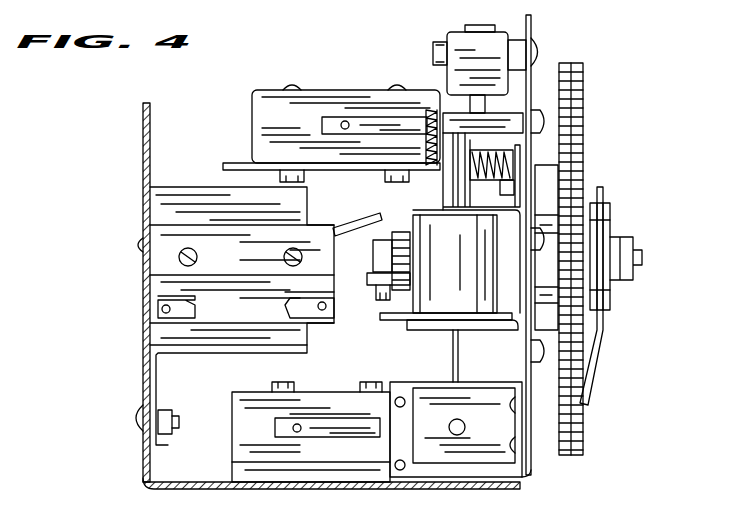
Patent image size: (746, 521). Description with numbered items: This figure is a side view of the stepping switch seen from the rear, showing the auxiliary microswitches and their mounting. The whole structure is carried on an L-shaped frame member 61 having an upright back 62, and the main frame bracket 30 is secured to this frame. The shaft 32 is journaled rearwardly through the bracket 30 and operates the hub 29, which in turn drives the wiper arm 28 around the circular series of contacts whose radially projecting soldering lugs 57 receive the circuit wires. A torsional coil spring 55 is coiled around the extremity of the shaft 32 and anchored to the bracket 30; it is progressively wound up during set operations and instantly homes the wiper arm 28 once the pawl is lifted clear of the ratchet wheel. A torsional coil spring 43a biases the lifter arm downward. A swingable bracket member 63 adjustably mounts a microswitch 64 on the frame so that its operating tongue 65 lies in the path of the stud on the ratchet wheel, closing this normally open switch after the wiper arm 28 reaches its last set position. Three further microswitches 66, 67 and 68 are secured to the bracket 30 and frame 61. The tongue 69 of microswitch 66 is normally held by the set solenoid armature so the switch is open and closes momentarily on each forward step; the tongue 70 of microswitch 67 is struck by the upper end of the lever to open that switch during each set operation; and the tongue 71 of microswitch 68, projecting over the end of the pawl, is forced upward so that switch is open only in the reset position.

The wiper arm 28 is at (601, 350).
The hub 29 is at (634, 240).
The main frame bracket 30 is at (526, 478).
The shaft 32 is at (373, 258).
The torsional coil spring 43a is at (560, 150).
The torsional coil spring 55 is at (400, 238).
The soldering lugs 57 is at (583, 102).
The L-shaped frame member 61 is at (151, 489).
The upright back 62 is at (143, 390).
The swingable bracket member 63 is at (203, 355).
The microswitch 64 is at (294, 267).
The operating tongue 65 is at (358, 222).
The microswitch 66 is at (245, 441).
The microswitch 67 is at (352, 100).
The microswitch 68 is at (447, 40).
The tongue 69 is at (315, 428).
The tongue 70 is at (378, 125).
The tongue 71 is at (487, 108).